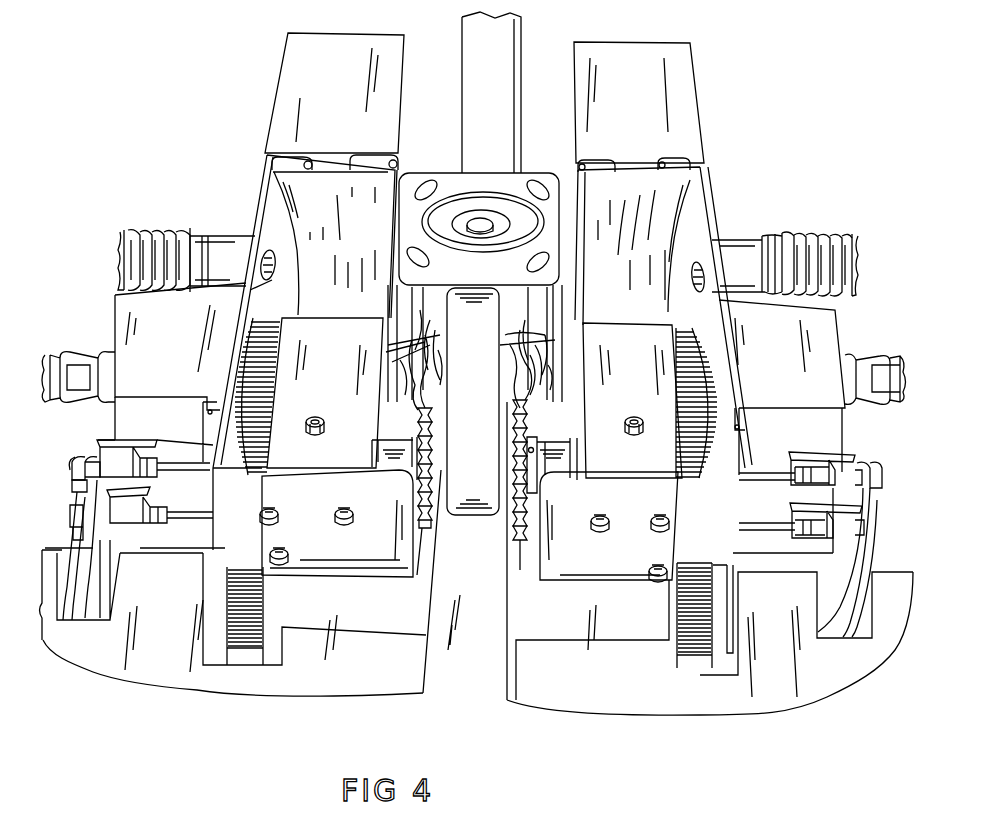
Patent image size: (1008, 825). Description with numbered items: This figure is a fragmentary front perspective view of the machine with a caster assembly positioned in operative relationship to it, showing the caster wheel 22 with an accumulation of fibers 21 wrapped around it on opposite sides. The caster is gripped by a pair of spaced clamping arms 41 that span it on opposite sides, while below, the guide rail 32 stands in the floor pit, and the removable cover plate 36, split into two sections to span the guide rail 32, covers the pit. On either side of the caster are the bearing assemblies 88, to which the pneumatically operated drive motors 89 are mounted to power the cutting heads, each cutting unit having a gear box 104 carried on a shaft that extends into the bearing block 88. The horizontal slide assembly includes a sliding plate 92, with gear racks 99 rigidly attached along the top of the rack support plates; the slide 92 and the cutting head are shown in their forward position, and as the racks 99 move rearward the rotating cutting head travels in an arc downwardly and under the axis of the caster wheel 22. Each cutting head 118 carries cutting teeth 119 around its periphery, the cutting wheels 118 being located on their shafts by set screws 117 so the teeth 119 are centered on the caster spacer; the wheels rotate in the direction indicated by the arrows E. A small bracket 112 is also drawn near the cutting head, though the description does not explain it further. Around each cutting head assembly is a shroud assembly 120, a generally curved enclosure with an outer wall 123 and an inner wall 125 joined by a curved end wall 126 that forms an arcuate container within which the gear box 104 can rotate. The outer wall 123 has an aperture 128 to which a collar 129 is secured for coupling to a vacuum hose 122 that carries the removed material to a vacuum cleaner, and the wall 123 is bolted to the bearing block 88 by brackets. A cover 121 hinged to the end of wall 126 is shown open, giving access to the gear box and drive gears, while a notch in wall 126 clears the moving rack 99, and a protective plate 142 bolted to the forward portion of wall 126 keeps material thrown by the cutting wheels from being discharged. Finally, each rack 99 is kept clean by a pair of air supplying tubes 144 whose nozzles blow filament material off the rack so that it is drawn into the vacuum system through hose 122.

The fibers 21 is at (512, 318).
The caster wheel 22 is at (480, 490).
The guide rail 32 is at (476, 693).
The cover plate 36 is at (322, 683).
The clamping arms 41 is at (558, 330).
The bearing assembly 88 is at (176, 341).
The drive motor 89 is at (870, 354).
The sliding plate 92 is at (677, 608).
The gear rack 99 is at (265, 605).
The gear box 104 is at (340, 391).
The bracket 112 is at (568, 463).
The set screw 117 is at (535, 455).
The cutting head 118 is at (543, 434).
The cutting teeth 119 is at (520, 570).
The shroud assembly 120 is at (251, 172).
The cover 121 is at (349, 91).
The vacuum hose 122 is at (166, 228).
The outer wall 123 is at (272, 298).
The inner wall 125 is at (393, 215).
The curved end wall 126 is at (369, 312).
The aperture 128 is at (275, 258).
The collar 129 is at (230, 237).
The protective plate 142 is at (352, 551).
The air supplying tubes 144 is at (182, 471).
The arrows E is at (397, 432).